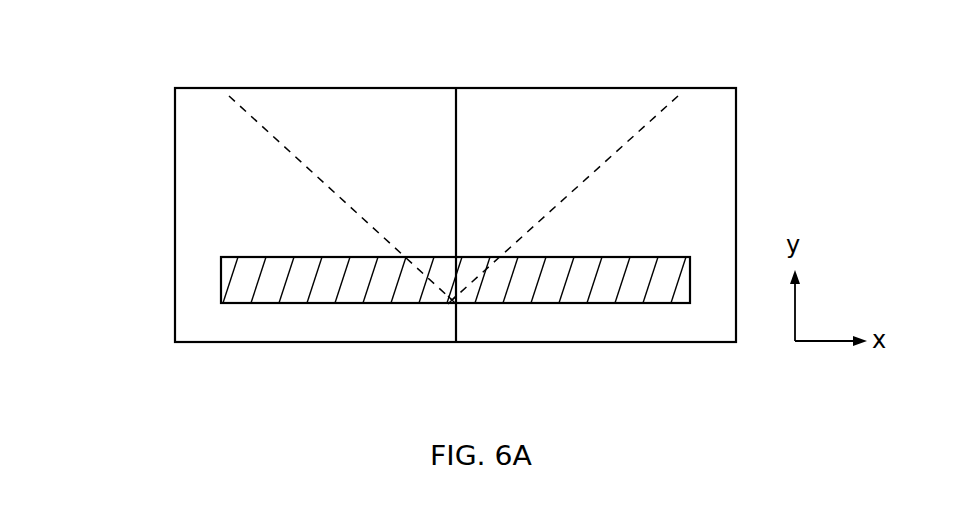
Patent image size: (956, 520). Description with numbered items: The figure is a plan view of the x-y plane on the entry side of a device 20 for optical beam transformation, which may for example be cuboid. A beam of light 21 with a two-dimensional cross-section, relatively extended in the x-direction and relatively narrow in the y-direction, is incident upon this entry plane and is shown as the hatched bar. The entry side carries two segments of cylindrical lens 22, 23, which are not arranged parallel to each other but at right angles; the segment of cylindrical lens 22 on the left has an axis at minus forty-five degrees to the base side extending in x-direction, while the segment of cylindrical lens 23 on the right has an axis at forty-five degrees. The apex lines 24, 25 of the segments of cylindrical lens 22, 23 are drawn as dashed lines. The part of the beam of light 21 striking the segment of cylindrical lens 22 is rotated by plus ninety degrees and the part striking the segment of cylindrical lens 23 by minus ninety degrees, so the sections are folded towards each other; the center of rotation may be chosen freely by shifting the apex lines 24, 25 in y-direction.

The device for optical beam transformation 20 is at (166, 206).
The beam of light 21 is at (268, 297).
The segment of cylindrical lens 22 is at (322, 108).
The segment of cylindrical lens 23 is at (693, 165).
The apex line 24 is at (253, 117).
The apex line 25 is at (665, 108).